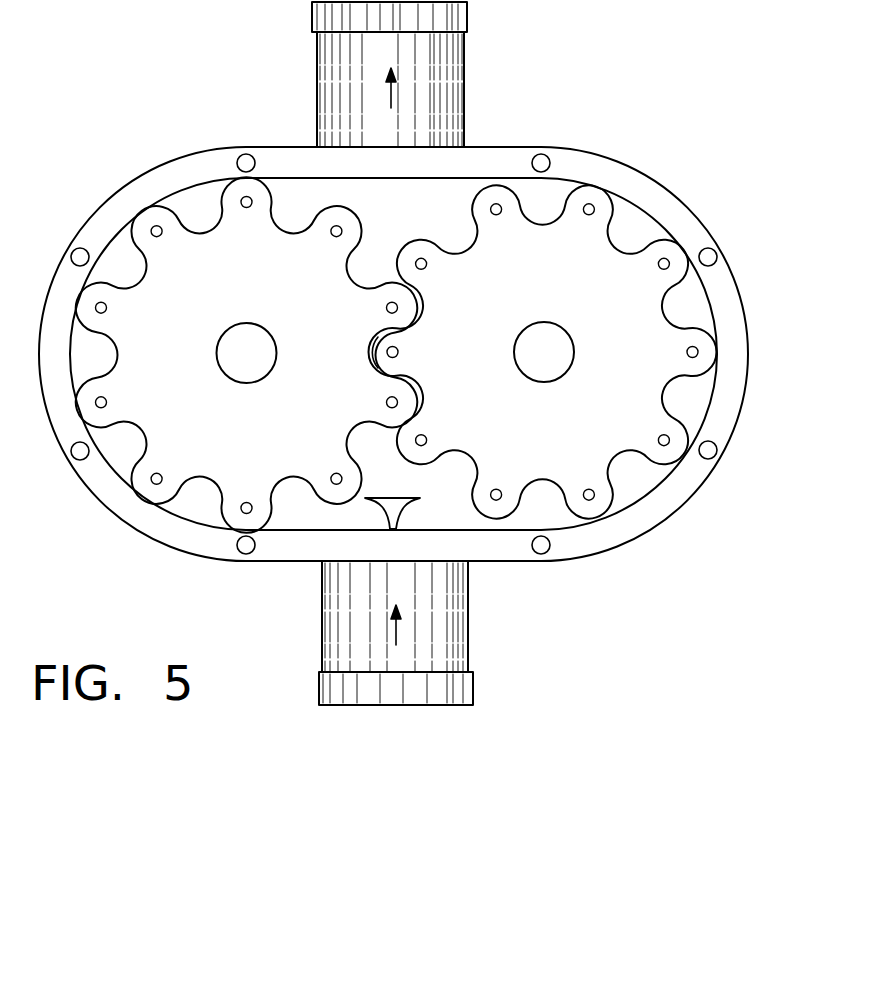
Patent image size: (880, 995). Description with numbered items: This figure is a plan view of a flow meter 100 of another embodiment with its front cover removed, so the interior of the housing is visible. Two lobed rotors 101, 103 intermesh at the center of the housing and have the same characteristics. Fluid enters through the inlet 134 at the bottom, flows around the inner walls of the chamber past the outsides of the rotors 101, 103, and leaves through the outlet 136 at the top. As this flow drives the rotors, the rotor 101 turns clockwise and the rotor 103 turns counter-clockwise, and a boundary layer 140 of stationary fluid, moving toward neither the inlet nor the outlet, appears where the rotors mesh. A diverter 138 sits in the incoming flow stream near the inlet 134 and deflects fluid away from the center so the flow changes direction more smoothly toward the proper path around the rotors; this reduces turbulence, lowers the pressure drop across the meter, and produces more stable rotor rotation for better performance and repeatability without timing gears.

The pump housing 100 is at (672, 165).
The rotor 101 is at (262, 286).
The rotor 103 is at (573, 287).
The inlet 134 is at (469, 630).
The outlet 136 is at (467, 72).
The diverter 138 is at (405, 510).
The boundary layer 140 is at (373, 360).